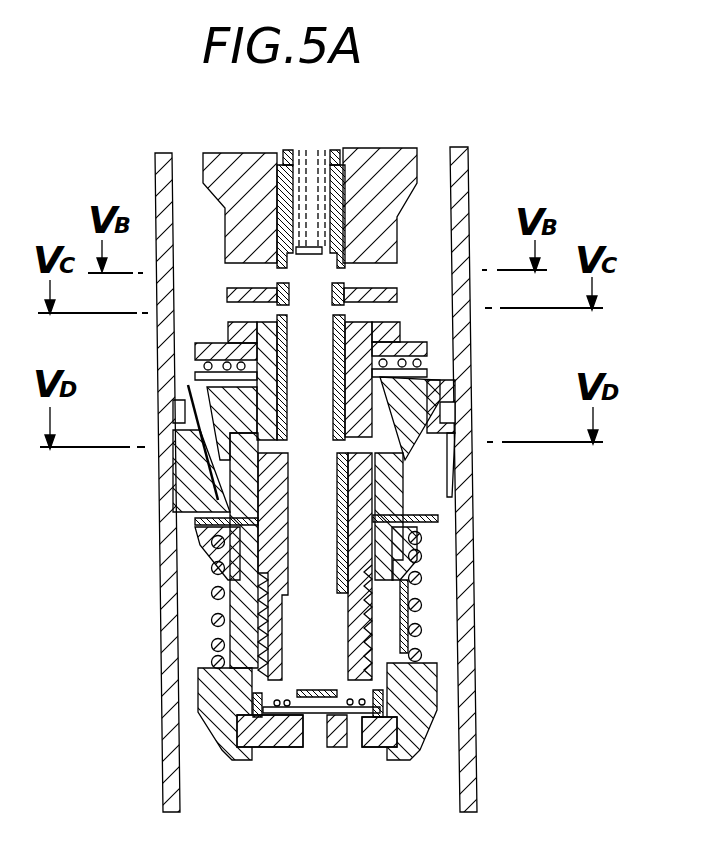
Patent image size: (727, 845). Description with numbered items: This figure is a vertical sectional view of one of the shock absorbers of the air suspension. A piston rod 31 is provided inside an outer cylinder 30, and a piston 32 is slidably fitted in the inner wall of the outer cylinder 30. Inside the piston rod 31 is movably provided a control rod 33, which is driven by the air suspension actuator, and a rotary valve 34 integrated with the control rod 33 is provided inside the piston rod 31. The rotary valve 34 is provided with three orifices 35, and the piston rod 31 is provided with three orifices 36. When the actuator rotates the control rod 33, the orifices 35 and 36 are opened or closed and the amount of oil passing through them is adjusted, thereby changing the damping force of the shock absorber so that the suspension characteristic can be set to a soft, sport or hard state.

The outer cylinder 30 is at (462, 197).
The piston rod 31 is at (222, 202).
The piston 32 is at (217, 397).
The control rod 33 is at (313, 155).
The rotary valve 34 is at (365, 195).
The orifices 35 is at (292, 447).
The orifices 36 is at (368, 447).